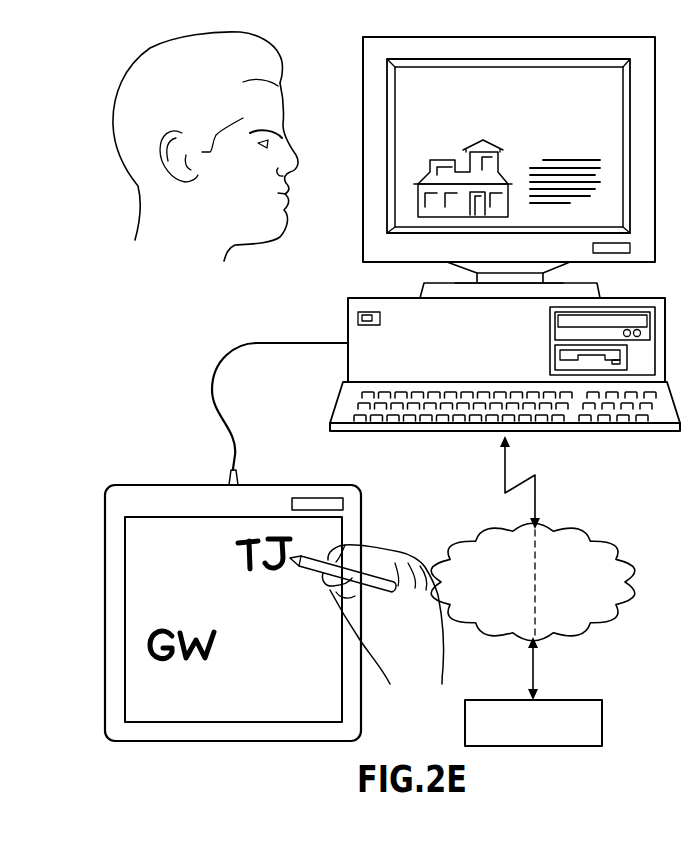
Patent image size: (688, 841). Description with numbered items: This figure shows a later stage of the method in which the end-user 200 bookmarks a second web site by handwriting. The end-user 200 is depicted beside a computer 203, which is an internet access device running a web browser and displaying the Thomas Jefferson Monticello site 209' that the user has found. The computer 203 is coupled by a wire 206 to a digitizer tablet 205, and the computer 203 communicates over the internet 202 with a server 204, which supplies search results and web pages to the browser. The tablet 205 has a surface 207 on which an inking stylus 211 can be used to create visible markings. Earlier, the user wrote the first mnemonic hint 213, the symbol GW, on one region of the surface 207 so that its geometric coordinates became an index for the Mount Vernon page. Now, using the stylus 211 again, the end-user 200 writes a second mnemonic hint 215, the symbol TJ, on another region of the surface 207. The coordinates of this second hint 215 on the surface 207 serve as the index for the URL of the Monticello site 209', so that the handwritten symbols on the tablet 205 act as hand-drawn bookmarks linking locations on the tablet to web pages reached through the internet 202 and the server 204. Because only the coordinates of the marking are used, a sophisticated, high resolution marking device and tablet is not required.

The end-user 200 is at (163, 103).
The internet 202 is at (583, 530).
The computer 203 is at (348, 131).
The server 204 is at (582, 699).
The digitizer tablet 205 is at (160, 484).
The wire 206 is at (276, 341).
The surface 207 is at (186, 706).
The Thomas Jefferson Monticello site 209' is at (407, 179).
The inking stylus 211 is at (304, 575).
The mnemonic hint 213 is at (182, 624).
The second mnemonic hint 215 is at (235, 558).